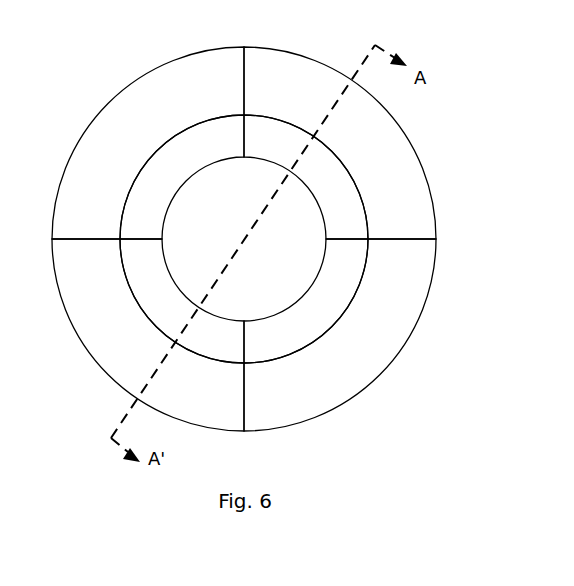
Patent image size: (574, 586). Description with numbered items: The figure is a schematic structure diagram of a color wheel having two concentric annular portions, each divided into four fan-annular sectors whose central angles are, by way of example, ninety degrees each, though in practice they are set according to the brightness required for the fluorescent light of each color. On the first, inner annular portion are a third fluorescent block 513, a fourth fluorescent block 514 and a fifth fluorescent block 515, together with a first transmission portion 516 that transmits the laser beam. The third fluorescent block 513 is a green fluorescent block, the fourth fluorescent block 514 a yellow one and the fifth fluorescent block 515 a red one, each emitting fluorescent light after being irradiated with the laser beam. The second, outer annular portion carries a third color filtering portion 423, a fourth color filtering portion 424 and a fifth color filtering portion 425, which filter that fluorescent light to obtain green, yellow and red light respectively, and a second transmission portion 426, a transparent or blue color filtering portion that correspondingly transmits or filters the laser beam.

The third color filtering portion 423 is at (148, 143).
The fourth color filtering portion 424 is at (340, 143).
The fifth color filtering portion 425 is at (340, 335).
The second transmission portion 426 is at (148, 335).
The third fluorescent block 513 is at (306, 301).
The fourth fluorescent block 514 is at (182, 301).
The fifth fluorescent block 515 is at (182, 177).
The first transmission portion 516 is at (306, 177).